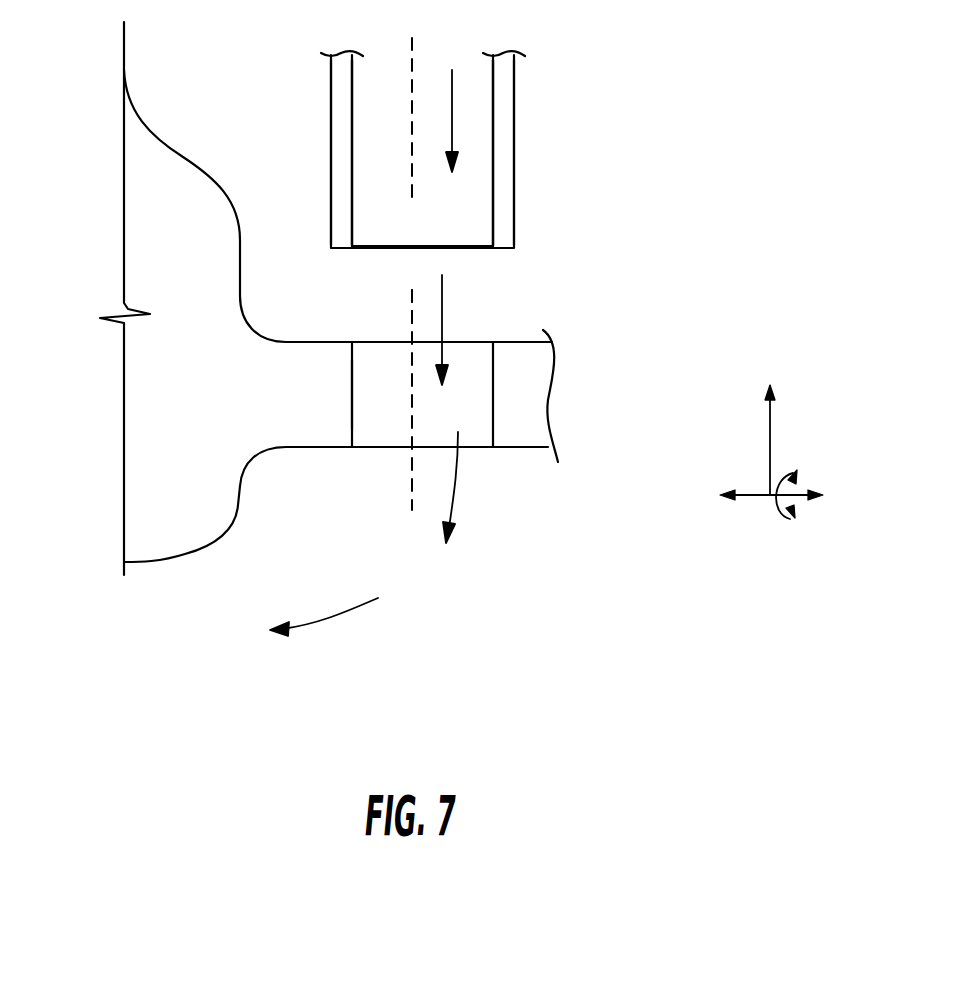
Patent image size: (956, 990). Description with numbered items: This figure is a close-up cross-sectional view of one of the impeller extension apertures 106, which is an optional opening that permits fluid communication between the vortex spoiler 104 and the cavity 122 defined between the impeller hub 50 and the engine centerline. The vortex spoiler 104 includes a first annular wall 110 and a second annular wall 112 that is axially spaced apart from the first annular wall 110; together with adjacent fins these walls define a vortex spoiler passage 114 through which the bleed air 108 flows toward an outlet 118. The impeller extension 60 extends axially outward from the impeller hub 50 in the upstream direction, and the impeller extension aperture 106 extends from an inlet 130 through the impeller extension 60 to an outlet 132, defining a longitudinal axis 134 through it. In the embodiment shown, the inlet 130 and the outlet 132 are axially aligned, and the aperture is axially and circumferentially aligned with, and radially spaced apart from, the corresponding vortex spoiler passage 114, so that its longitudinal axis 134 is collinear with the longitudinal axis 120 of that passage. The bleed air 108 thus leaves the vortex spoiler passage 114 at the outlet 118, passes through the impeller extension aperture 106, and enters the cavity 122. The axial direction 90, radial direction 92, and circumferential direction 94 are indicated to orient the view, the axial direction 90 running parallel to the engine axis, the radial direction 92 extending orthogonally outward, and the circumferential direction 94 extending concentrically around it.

The impeller hub 50 is at (185, 342).
The impeller extension 60 is at (513, 365).
The axial direction 90 is at (750, 497).
The radial direction 92 is at (771, 432).
The circumferential direction 94 is at (781, 521).
The vortex spoiler 104 is at (553, 235).
The impeller extension aperture 106 is at (374, 392).
The bleed air 108 is at (452, 120).
The first annular wall 110 is at (515, 80).
The second annular wall 112 is at (331, 107).
The vortex spoiler passage 114 is at (373, 47).
The outlet 118 is at (390, 250).
The longitudinal axis 120 is at (412, 200).
The cavity 122 is at (366, 545).
The inlet 130 is at (366, 342).
The outlet 132 is at (386, 448).
The longitudinal axis 134 is at (410, 315).